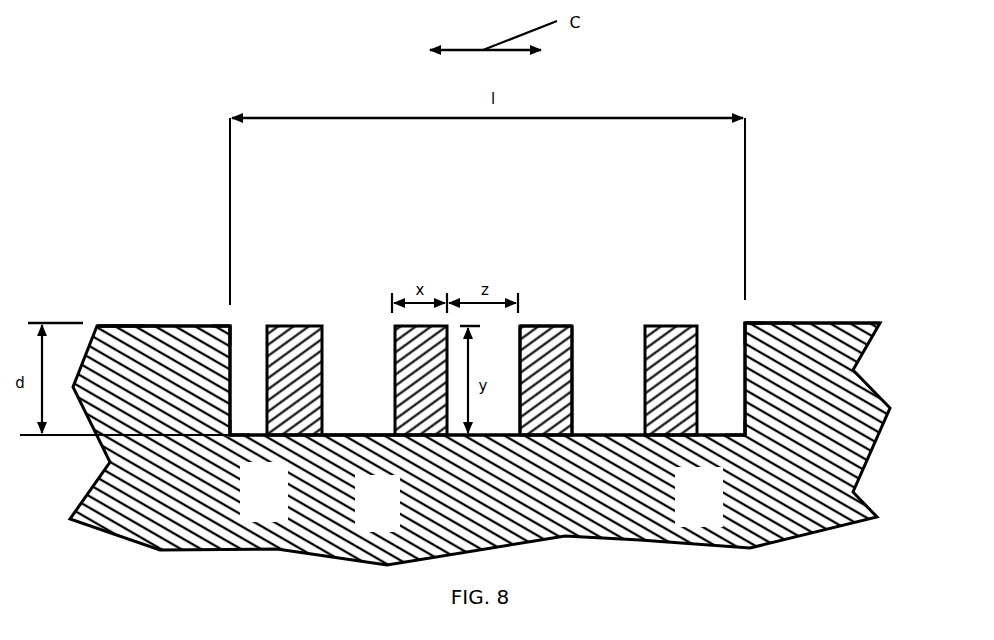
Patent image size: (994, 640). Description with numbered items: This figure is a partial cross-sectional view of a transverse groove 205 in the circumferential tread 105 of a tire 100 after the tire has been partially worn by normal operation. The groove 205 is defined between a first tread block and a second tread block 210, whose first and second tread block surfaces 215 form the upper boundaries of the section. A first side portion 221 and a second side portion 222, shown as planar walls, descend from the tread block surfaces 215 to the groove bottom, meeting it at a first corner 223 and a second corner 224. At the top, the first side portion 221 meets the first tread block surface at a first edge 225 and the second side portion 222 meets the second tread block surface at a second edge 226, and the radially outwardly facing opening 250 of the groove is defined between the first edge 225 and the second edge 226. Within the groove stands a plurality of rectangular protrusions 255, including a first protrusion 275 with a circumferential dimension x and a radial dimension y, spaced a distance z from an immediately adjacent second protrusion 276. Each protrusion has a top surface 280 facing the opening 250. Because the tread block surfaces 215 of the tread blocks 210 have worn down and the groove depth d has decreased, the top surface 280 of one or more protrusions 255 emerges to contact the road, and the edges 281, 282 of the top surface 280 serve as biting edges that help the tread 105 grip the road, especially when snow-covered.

The tire 100 is at (157, 190).
The tread 105 is at (849, 320).
The transverse groove 205 is at (634, 200).
The tread block 210 is at (830, 278).
The tread block surface 215 is at (122, 322).
The first side portion 221 is at (232, 368).
The second side portion 222 is at (742, 360).
The first corner 223 is at (243, 415).
The second corner 224 is at (727, 417).
The first edge 225 is at (231, 326).
The second edge 226 is at (743, 323).
The opening 250 is at (468, 246).
The protrusions 255 is at (432, 256).
The first protrusion 275 is at (387, 342).
The second protrusion 276 is at (570, 353).
The top surface 280 is at (546, 323).
The edge 281 is at (513, 325).
The edge 282 is at (605, 332).